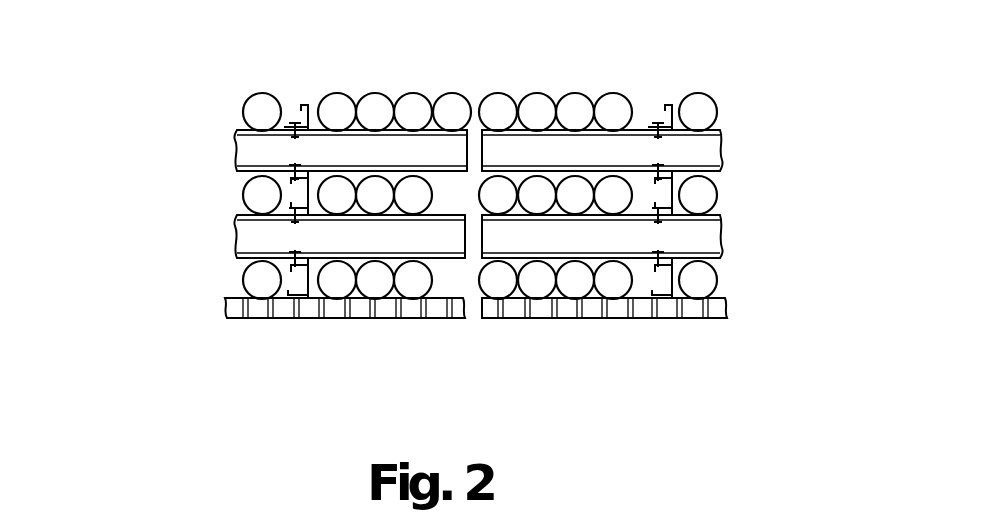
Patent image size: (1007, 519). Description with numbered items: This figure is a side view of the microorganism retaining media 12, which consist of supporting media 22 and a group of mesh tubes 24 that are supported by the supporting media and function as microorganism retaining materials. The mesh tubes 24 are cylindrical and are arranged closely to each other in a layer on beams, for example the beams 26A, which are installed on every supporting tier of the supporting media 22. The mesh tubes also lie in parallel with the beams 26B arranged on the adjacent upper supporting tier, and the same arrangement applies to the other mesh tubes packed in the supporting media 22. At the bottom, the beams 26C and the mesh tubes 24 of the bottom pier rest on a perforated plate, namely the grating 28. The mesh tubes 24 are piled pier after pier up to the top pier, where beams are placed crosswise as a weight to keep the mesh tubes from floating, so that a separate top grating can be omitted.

The microorganism retaining media 12 is at (775, 100).
The supporting media 22 is at (60, 252).
The mesh tubes 24 is at (242, 280).
The beams 26A is at (237, 238).
The beams 26B is at (250, 195).
The beams 26C is at (685, 318).
The grating 28 is at (610, 318).